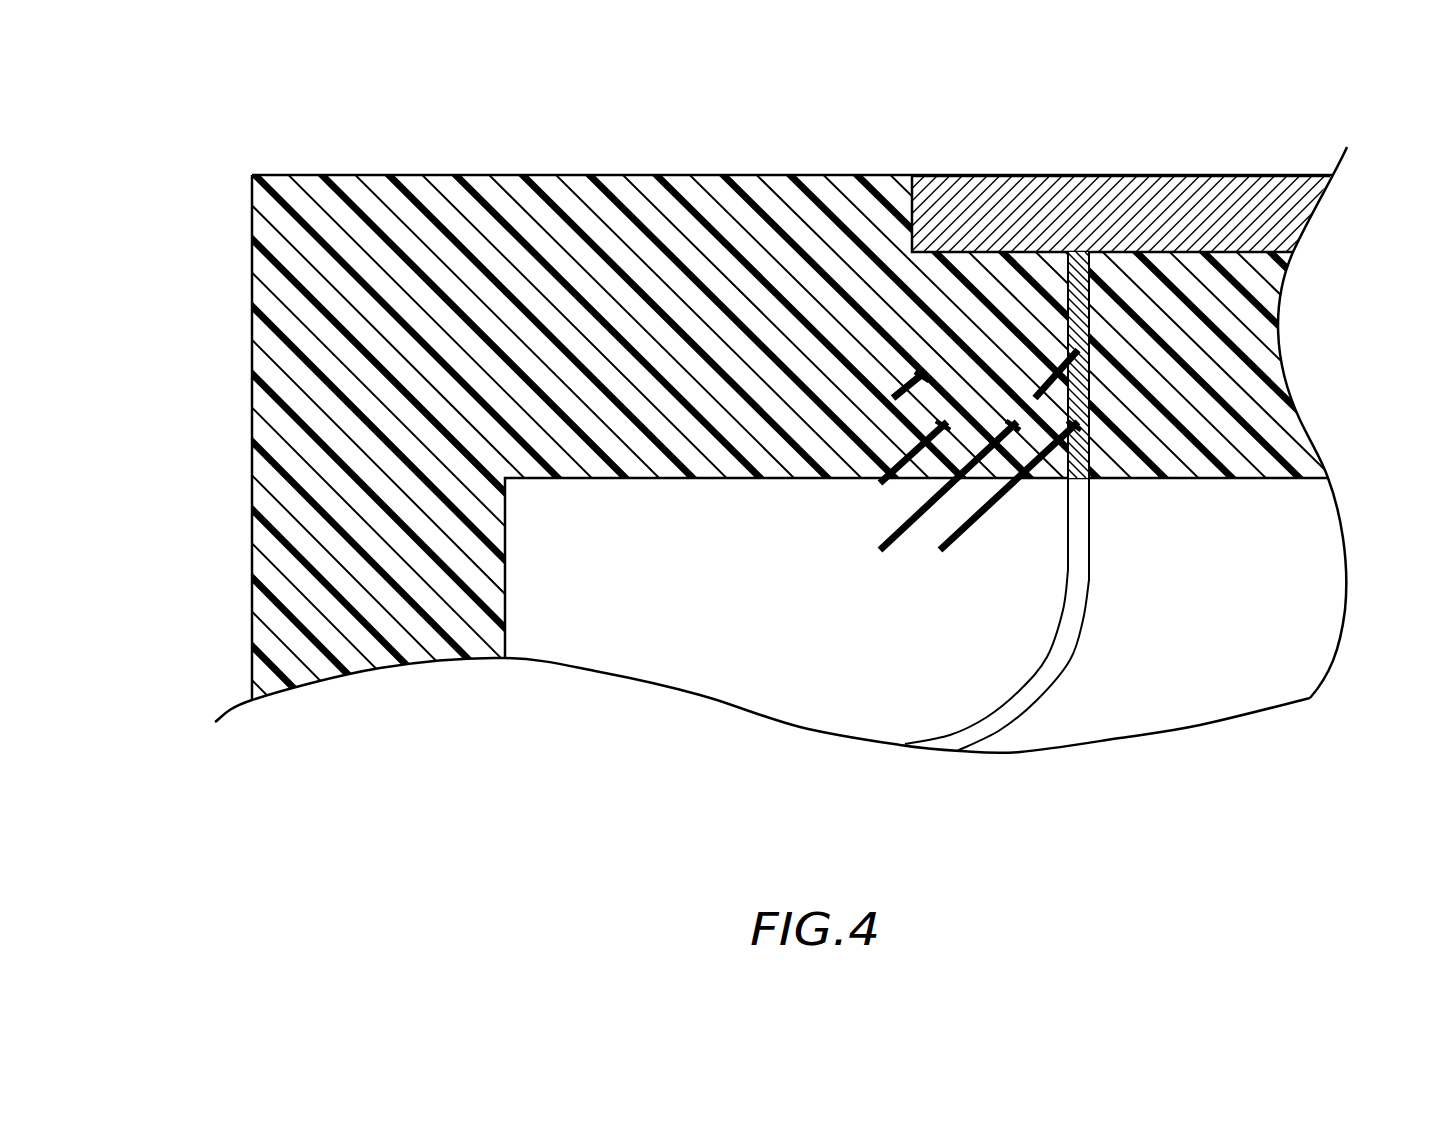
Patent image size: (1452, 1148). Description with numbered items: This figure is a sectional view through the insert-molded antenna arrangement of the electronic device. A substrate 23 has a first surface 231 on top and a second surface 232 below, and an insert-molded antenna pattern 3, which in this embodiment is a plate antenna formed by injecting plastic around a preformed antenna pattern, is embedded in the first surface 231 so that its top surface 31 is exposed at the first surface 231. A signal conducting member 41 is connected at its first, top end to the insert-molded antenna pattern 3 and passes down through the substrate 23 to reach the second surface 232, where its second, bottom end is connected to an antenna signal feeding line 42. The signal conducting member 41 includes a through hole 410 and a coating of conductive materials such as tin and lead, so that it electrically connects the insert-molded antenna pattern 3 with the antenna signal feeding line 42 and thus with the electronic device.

The substrate 23 is at (268, 418).
The first surface 231 is at (408, 173).
The second surface 232 is at (578, 478).
The insert-molded antenna pattern 3 is at (983, 190).
The top surface 31 is at (1220, 175).
The through hole 410 is at (1080, 250).
The signal conducting member 41 is at (1085, 392).
The antenna signal feeding line 42 is at (1090, 573).